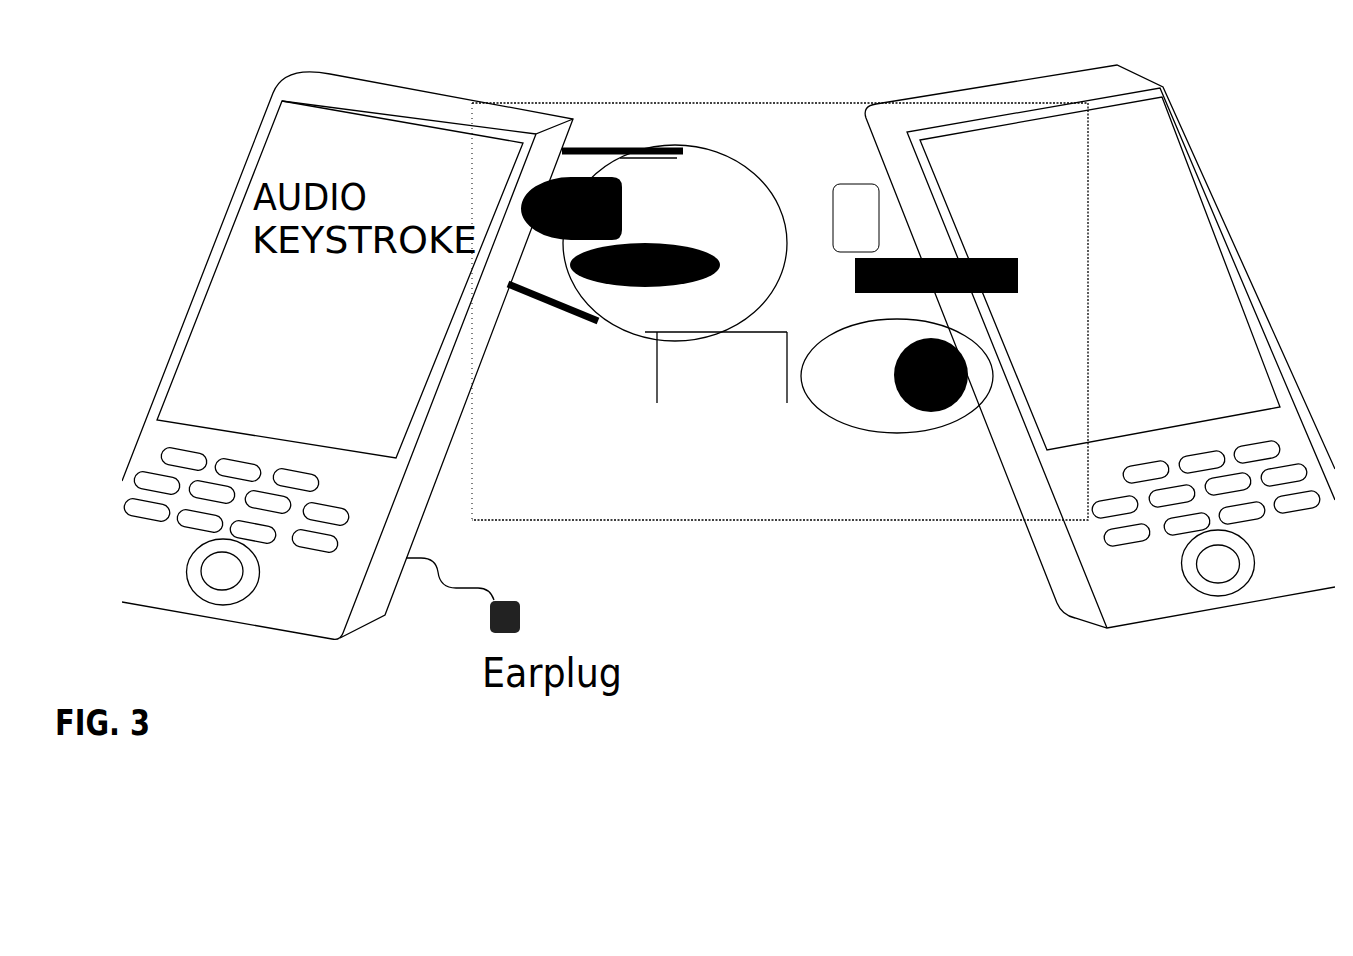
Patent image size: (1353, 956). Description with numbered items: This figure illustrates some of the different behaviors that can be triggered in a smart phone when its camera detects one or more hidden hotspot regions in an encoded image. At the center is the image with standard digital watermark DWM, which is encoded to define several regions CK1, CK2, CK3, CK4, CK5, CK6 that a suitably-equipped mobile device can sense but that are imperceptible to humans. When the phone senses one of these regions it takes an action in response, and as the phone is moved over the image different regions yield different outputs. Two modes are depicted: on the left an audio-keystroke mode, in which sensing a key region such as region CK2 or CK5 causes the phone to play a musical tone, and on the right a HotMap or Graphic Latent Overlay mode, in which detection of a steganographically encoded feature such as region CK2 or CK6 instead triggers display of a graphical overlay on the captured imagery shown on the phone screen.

The encoded region CK1 is at (749, 280).
The encoded region CK2 is at (769, 235).
The encoded region CK3 is at (716, 367).
The encoded region CK4 is at (856, 218).
The encoded region CK5 is at (645, 265).
The encoded region CK6 is at (931, 375).
The image with standard digital watermark DWM is at (829, 311).